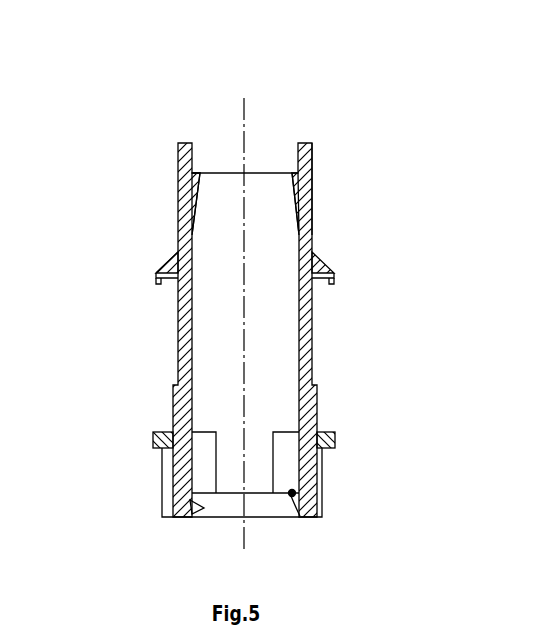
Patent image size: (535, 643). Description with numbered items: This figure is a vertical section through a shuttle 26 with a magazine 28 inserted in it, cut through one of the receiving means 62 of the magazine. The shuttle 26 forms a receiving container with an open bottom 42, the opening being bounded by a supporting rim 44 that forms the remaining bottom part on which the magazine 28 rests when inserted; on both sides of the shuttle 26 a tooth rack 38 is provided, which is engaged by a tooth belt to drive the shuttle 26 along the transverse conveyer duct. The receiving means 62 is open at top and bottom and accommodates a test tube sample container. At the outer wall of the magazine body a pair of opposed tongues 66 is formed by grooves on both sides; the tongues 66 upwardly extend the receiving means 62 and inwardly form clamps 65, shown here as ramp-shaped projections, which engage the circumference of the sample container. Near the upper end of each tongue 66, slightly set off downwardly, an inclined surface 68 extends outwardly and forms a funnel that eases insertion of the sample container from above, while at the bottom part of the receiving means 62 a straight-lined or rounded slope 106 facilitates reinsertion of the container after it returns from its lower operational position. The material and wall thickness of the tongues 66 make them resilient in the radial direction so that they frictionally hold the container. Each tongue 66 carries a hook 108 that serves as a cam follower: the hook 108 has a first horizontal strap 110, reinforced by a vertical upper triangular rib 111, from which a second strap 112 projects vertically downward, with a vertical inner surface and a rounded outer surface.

The receiving means 62 is at (327, 128).
The inclined surface 68 is at (196, 173).
The clamp 65 is at (313, 190).
The tongue 66 is at (307, 228).
The vertical upper triangular rib 111 is at (175, 262).
The hook 108 is at (160, 262).
The second strap 112 is at (156, 282).
The first horizontal strap 110 is at (167, 280).
The magazine 28 is at (314, 352).
The shuttle 26 is at (336, 438).
The tooth rack 38 is at (321, 485).
The open bottom 42 is at (272, 505).
The supporting rim 44 is at (297, 514).
The slope 106 is at (197, 512).